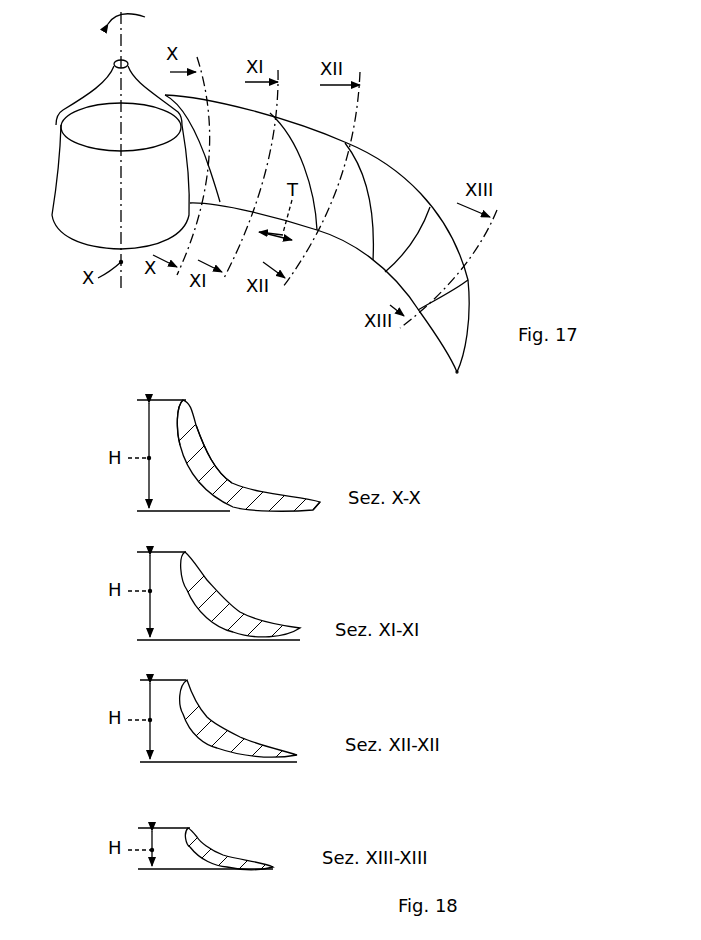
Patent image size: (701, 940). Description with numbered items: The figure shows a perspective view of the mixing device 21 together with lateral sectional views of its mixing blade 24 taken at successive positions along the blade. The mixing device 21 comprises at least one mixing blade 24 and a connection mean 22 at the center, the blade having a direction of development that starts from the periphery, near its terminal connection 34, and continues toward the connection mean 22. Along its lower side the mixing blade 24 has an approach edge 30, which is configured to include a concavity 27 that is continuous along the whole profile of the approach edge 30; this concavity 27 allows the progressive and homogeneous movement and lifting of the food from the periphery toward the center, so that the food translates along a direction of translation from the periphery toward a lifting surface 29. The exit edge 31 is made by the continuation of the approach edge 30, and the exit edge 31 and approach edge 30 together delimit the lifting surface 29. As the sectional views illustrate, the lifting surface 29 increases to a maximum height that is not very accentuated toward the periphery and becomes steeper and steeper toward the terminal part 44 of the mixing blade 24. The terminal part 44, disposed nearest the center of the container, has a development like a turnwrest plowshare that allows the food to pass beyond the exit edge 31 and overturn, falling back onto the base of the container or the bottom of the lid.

In FIG. 17, the mixing device 21 is at (306, 200).
In FIG. 17, the connection mean 22 is at (84, 91).
In FIG. 17, the mixing blade 24 is at (306, 200).
In FIG. 18, the mixing blade 24 is at (186, 400).
In FIG. 17, the concavity 27 is at (308, 281).
In FIG. 17, the lifting surface 29 is at (298, 103).
In FIG. 18, the lifting surface 29 is at (233, 483).
In FIG. 17, the approach edge 30 is at (350, 248).
In FIG. 18, the approach edge 30 is at (321, 501).
In FIG. 17, the exit edge 31 is at (215, 98).
In FIG. 18, the exit edge 31 is at (180, 422).
In FIG. 17, the terminal connection 34 is at (457, 376).
In FIG. 17, the terminal part 44 is at (165, 91).